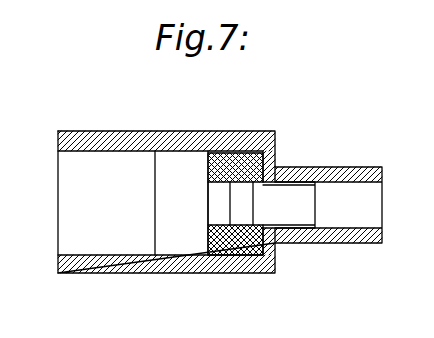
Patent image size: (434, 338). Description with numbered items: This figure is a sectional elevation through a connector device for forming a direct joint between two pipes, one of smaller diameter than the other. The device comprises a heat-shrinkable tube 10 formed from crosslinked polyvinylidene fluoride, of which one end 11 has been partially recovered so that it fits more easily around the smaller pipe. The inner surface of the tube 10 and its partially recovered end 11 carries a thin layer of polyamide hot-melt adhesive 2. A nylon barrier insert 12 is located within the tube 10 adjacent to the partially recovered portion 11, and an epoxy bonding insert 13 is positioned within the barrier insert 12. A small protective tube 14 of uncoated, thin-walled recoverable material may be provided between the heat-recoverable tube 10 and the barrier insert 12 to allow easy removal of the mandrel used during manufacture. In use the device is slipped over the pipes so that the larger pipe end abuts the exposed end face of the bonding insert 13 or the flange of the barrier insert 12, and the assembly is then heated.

The polyamide hot-melt adhesive 2 is at (98, 153).
The heat-shrinkable tube 10 is at (102, 273).
The partially recovered end 11 is at (340, 166).
The barrier insert 12 is at (236, 160).
The bonding insert 13 is at (214, 228).
The protective tube 14 is at (187, 133).